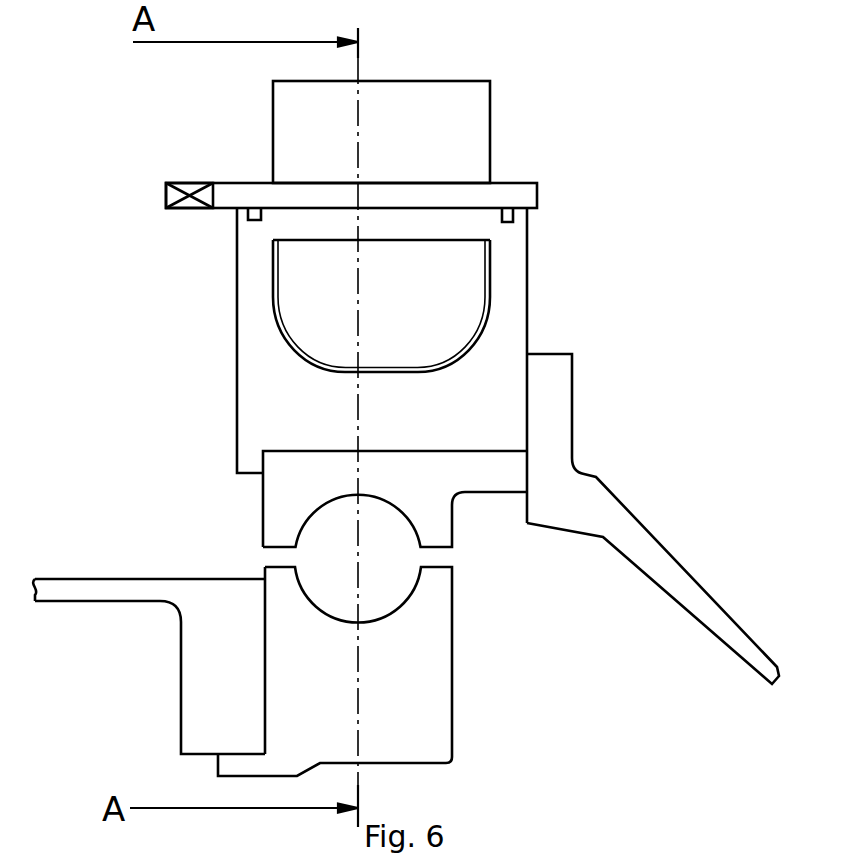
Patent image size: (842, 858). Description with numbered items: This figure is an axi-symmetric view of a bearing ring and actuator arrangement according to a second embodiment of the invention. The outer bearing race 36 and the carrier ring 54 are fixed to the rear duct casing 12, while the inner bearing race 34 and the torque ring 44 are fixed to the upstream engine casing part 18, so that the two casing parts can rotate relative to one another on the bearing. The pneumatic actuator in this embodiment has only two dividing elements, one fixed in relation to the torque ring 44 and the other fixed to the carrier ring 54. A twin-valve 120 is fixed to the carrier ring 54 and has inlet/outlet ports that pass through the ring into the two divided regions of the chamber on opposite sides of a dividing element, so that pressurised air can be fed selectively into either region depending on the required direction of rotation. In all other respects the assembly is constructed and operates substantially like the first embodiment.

The twin-valve 120 is at (477, 126).
The torque ring 44 is at (528, 197).
The carrier ring 54 is at (250, 255).
The outer bearing race 36 is at (442, 518).
The inner bearing race 34 is at (443, 603).
The upstream engine casing part 18 is at (144, 585).
The rear duct casing 12 is at (602, 512).